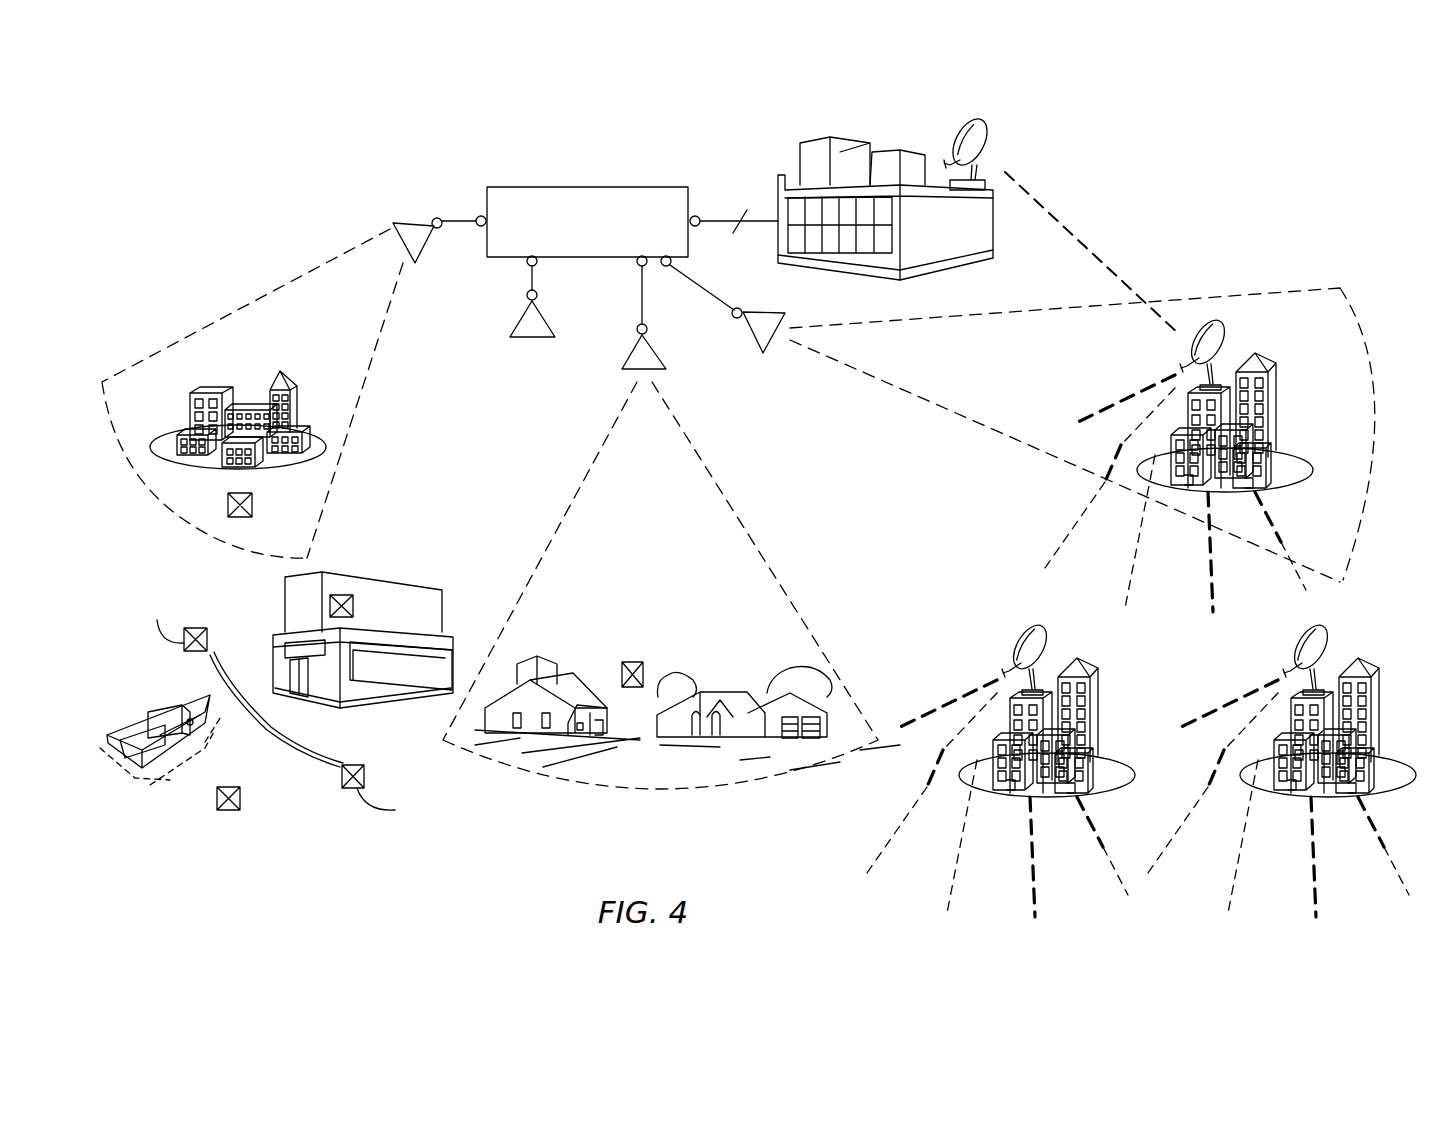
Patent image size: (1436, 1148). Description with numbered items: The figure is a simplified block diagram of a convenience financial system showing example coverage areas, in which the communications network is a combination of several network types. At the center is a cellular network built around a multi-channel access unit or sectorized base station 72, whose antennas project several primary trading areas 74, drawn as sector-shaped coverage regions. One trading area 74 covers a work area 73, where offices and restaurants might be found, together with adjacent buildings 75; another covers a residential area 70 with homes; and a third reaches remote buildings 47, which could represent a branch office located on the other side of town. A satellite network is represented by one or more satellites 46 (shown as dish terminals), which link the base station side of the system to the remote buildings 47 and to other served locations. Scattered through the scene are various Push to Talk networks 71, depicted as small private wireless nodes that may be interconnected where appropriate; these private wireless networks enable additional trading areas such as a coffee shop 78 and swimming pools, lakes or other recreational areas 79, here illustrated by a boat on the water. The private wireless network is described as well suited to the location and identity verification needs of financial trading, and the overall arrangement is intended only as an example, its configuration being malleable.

The satellite 46 is at (975, 115).
The remote buildings 47 is at (1268, 357).
The residential area 70 is at (565, 678).
The Push to Talk networks 71 is at (253, 505).
The multi-channel access unit or sectorized base station 72 is at (587, 187).
The work area 73 is at (173, 445).
The trading areas 74 is at (208, 333).
The adjacent buildings 75 is at (292, 385).
The coffee shop 78 is at (380, 579).
The recreational areas 79 is at (174, 798).